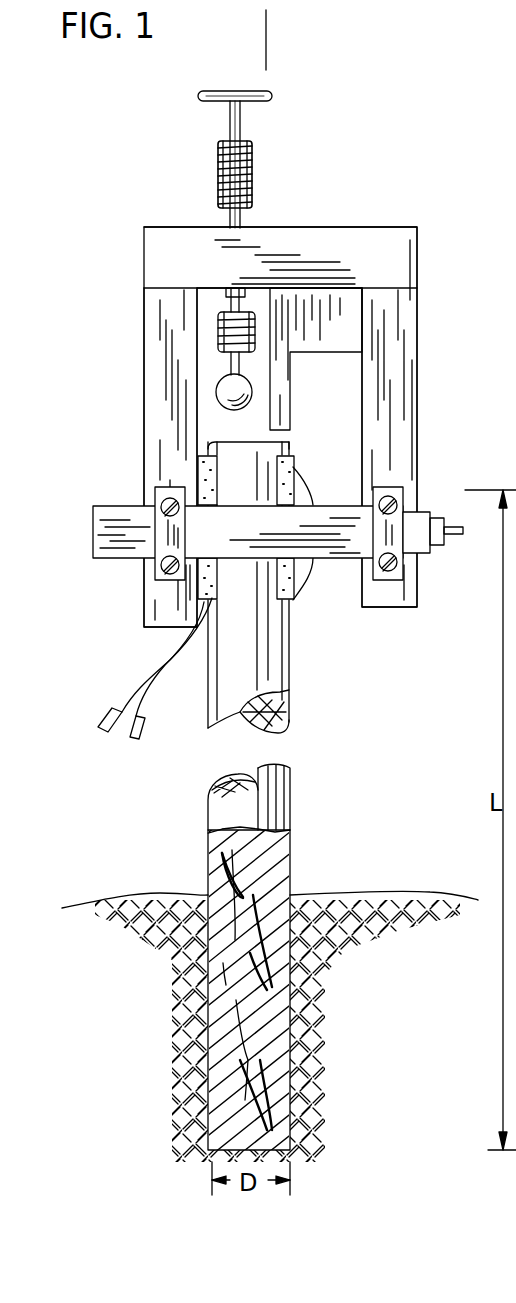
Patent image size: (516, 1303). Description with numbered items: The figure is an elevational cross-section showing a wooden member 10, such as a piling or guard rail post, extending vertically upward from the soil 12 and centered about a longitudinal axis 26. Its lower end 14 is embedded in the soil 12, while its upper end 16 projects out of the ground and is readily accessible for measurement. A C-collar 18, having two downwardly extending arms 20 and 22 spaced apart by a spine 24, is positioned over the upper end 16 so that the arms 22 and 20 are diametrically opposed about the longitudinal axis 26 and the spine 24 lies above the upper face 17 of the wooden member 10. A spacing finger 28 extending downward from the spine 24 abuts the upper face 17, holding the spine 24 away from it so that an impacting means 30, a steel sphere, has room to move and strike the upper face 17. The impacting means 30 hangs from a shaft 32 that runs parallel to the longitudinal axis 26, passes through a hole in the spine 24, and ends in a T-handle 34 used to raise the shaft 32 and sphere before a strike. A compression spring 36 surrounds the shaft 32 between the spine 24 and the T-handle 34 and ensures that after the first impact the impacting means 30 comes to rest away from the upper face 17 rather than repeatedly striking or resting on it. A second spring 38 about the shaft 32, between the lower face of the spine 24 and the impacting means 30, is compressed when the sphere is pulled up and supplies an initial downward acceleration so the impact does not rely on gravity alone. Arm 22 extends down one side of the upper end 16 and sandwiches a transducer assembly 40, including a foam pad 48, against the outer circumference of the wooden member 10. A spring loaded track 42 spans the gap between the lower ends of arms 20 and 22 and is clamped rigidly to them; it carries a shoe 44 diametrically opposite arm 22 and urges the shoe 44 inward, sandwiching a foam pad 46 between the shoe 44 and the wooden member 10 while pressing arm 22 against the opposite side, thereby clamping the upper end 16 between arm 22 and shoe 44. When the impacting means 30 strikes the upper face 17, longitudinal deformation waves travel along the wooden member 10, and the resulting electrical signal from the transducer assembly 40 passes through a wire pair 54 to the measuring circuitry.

The wooden member 10 is at (292, 777).
The soil 12 is at (100, 895).
The lower end 14 is at (312, 873).
The upper end 16 is at (205, 701).
The upper face 17 is at (215, 428).
The C-collar 18 is at (368, 207).
The arm 20 is at (388, 400).
The arm 22 is at (156, 394).
The spine 24 is at (296, 235).
The longitudinal axis 26 is at (268, 43).
The spacing finger 28 is at (345, 328).
The impacting means 30 is at (226, 394).
The shaft 32 is at (225, 298).
The T-handle 34 is at (200, 97).
The compression spring 36 is at (218, 181).
The second spring 38 is at (218, 326).
The transducer assembly 40 is at (207, 594).
The spring loaded track 42 is at (340, 560).
The shoe 44 is at (313, 497).
The foam pad 46 is at (285, 598).
The foam pad 48 is at (205, 583).
The wire pair 54 is at (127, 690).